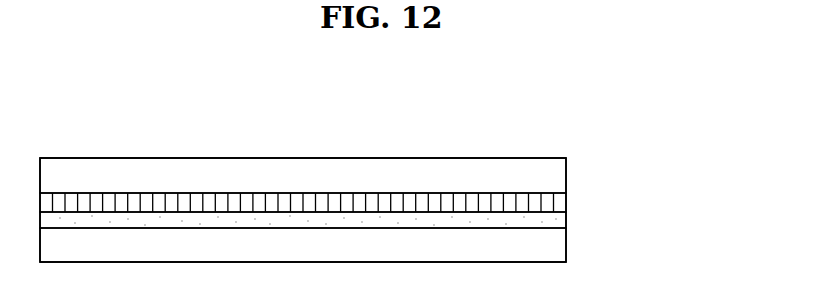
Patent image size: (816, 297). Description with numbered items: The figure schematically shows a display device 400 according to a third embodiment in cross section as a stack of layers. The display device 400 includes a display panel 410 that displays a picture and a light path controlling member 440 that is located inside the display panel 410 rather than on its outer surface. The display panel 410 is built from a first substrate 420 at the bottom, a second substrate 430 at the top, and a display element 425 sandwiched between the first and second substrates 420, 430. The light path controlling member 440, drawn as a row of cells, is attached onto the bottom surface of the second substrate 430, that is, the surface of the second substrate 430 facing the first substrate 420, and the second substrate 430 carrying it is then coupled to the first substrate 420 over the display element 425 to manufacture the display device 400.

The display device 400 is at (562, 108).
The display panel 410 is at (670, 170).
The first substrate 420 is at (550, 247).
The display element 425 is at (557, 219).
The second substrate 430 is at (555, 178).
The light path controlling member 440 is at (472, 204).